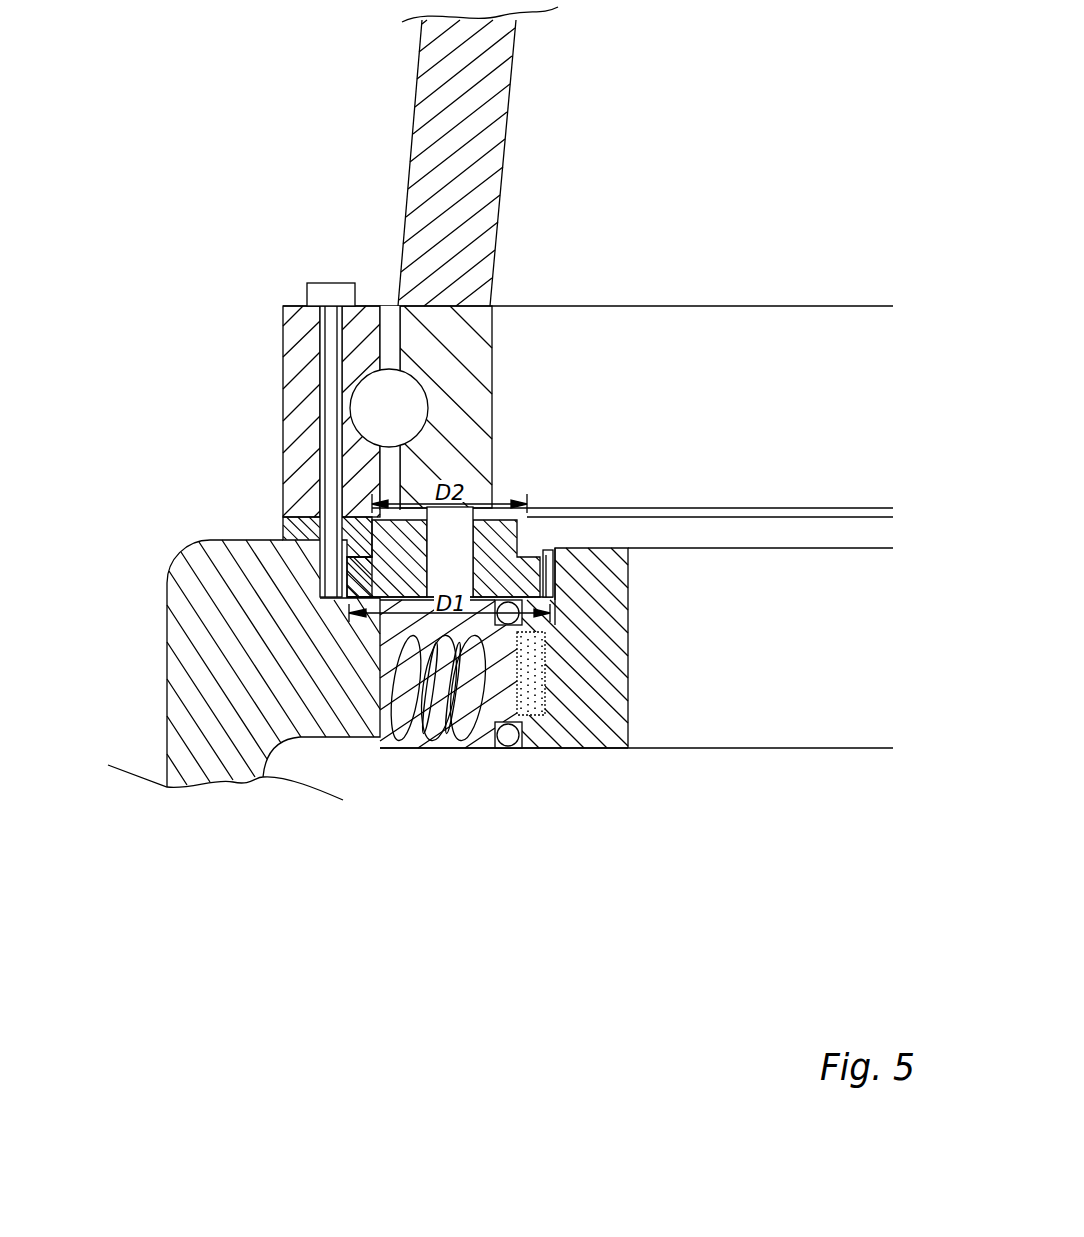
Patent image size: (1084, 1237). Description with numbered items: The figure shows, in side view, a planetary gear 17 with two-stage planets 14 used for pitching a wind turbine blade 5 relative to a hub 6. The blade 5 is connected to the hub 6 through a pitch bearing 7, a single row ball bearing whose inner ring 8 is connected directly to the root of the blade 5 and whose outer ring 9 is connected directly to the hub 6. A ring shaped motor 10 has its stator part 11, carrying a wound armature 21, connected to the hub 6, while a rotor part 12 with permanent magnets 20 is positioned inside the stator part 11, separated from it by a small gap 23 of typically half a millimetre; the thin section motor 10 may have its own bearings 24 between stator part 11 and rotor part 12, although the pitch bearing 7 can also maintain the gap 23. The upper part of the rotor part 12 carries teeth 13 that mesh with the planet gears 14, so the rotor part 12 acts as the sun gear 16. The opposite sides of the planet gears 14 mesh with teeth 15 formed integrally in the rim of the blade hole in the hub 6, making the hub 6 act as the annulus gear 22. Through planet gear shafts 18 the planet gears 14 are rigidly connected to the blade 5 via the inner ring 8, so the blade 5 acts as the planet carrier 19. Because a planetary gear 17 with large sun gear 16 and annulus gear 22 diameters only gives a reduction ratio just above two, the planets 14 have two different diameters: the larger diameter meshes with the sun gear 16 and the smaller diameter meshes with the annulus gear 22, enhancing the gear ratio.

The wind turbine blade 5 is at (487, 107).
The hub 6 is at (182, 663).
The pitch bearing 7 is at (363, 312).
The inner ring 8 is at (483, 407).
The outer ring 9 is at (300, 350).
The ring shaped motor 10 is at (632, 763).
The stator part 11 is at (480, 733).
The rotor part 12 is at (630, 690).
The teeth 13 is at (548, 552).
The planet gears 14 is at (497, 545).
The teeth 15 is at (365, 518).
The sun gear 16 is at (615, 563).
The planetary gear 17 is at (563, 500).
The planet gear shafts 18 is at (356, 539).
The planet carrier 19 is at (483, 443).
The permanent magnets 20 is at (547, 717).
The wound armature 21 is at (430, 725).
The annulus gear 22 is at (352, 542).
The gap 23 is at (527, 720).
The bearings 24 is at (509, 738).